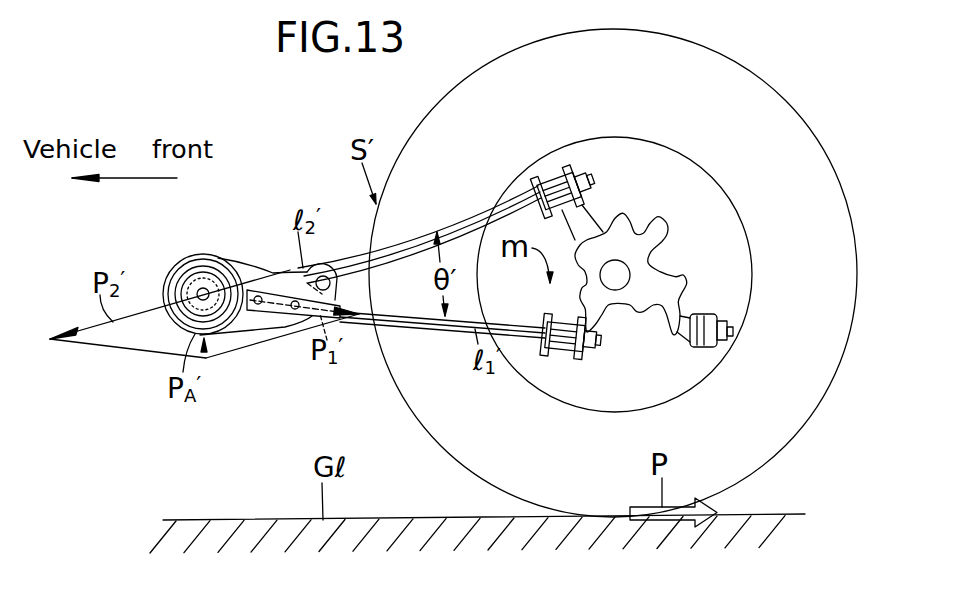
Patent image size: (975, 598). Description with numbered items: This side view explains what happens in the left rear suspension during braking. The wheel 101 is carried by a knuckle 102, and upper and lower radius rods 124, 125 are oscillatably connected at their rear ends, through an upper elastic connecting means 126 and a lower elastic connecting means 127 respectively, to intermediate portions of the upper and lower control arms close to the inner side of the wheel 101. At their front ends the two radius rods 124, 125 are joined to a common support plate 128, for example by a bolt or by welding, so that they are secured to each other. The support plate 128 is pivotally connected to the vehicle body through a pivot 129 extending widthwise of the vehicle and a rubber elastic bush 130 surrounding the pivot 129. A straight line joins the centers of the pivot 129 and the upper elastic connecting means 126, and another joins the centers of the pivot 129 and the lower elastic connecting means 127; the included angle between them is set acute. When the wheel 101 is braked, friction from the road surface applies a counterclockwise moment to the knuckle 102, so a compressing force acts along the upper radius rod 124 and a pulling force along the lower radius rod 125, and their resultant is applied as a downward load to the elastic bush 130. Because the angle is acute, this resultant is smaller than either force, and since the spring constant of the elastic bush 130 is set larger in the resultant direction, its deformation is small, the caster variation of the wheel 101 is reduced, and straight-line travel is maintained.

The wheel 101 is at (781, 96).
The knuckle 102 is at (618, 216).
The upper radius rod 124 is at (485, 212).
The lower radius rod 125 is at (433, 323).
The upper elastic connecting means 126 is at (562, 163).
The lower elastic connecting means 127 is at (564, 366).
The support plate 128 is at (220, 253).
The pivot 129 is at (193, 268).
The elastic bush 130 is at (205, 358).